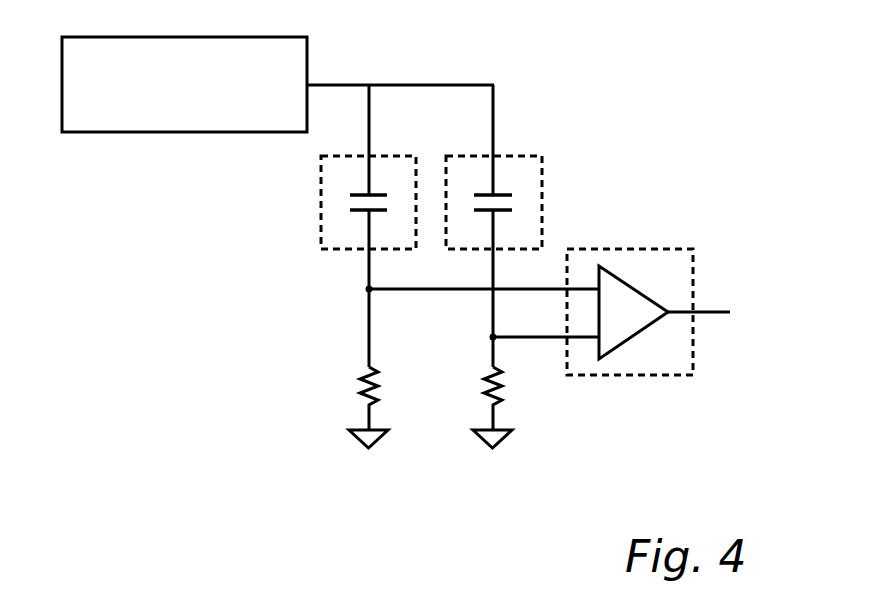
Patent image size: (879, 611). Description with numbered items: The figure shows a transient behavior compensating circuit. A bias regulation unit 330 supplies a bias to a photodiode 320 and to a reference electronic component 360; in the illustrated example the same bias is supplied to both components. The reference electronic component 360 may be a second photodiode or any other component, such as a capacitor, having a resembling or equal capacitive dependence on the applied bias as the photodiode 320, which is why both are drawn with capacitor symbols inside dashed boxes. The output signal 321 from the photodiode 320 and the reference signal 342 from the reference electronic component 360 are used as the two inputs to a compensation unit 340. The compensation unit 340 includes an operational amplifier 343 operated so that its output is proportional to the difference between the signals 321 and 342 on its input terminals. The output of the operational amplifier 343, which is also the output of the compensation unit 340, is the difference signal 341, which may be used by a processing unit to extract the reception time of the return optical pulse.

The bias regulation unit 330 is at (183, 133).
The photodiode 320 is at (321, 203).
The reference electronic component 360 is at (542, 202).
The output signal 321 is at (448, 290).
The reference signal 342 is at (503, 340).
The compensation unit 340 is at (686, 332).
The difference signal 341 is at (710, 312).
The operational amplifier 343 is at (608, 353).